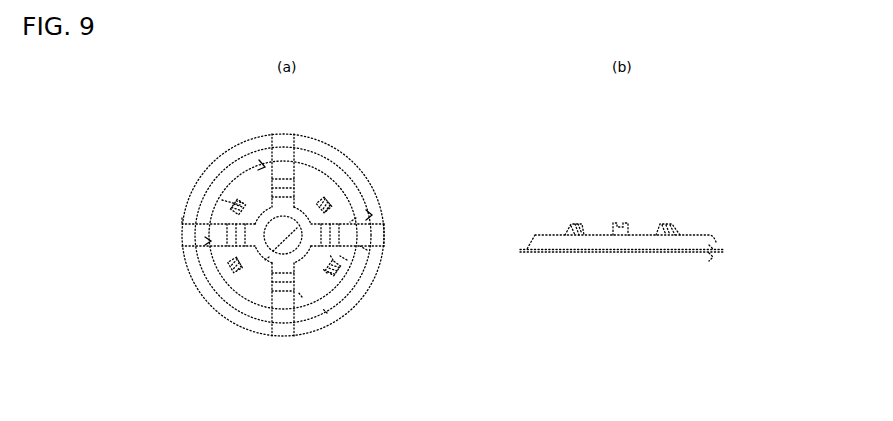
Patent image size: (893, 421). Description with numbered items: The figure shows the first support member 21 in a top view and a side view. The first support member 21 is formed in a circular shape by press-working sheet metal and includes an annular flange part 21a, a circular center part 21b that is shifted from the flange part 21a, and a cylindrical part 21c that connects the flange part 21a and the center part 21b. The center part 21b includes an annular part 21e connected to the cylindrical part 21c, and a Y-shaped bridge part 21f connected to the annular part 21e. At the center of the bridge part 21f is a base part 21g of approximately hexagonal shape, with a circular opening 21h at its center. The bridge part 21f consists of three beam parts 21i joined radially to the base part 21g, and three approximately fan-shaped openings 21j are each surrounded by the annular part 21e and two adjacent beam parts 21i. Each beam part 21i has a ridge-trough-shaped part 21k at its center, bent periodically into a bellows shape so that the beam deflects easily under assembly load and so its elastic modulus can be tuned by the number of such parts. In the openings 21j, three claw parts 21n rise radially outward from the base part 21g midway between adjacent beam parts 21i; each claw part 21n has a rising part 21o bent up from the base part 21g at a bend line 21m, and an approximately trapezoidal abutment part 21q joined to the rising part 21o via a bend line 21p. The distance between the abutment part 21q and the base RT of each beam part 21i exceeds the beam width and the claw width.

The first support member 21 is at (212, 162).
The annular flange part 21a is at (192, 272).
The circular center part 21b is at (385, 233).
The cylindrical part 21c is at (327, 313).
The annular part 21e is at (356, 218).
The Y-shaped bridge part 21f is at (302, 297).
The base part 21g is at (260, 208).
The circular opening 21h is at (269, 257).
The beam part 21i is at (222, 200).
The fan-shaped opening 21j is at (263, 165).
The ridge-trough-shaped part 21k is at (205, 219).
The bend line 21m is at (367, 250).
The claw part 21n is at (323, 167).
The rising part 21o is at (347, 260).
The bend line 21p is at (327, 273).
The abutment part 21q is at (333, 260).
The base of the beam part RT is at (330, 205).